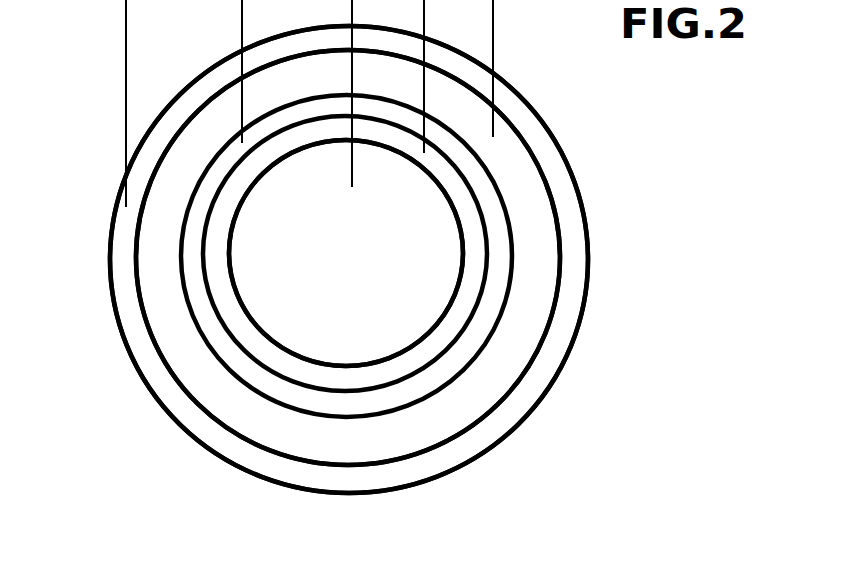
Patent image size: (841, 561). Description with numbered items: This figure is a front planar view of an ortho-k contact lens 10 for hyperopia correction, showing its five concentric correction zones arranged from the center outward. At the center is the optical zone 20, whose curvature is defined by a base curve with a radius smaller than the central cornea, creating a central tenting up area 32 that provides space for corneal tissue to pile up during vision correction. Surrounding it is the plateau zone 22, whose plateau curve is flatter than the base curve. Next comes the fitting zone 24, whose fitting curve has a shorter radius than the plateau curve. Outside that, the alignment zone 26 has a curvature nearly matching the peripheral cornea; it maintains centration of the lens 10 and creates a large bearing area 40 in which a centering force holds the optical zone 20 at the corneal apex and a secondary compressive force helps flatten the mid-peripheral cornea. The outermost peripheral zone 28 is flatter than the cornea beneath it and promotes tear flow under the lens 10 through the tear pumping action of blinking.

The ortho-k contact lens 10 is at (200, 523).
The optical zone 20 is at (348, 262).
The plateau zone 22 is at (212, 262).
The fitting zone 24 is at (382, 403).
The alignment zone 26 is at (522, 188).
The peripheral zone 28 is at (527, 123).
The central tenting up area 32 is at (353, 323).
The large bearing area 40 is at (415, 428).